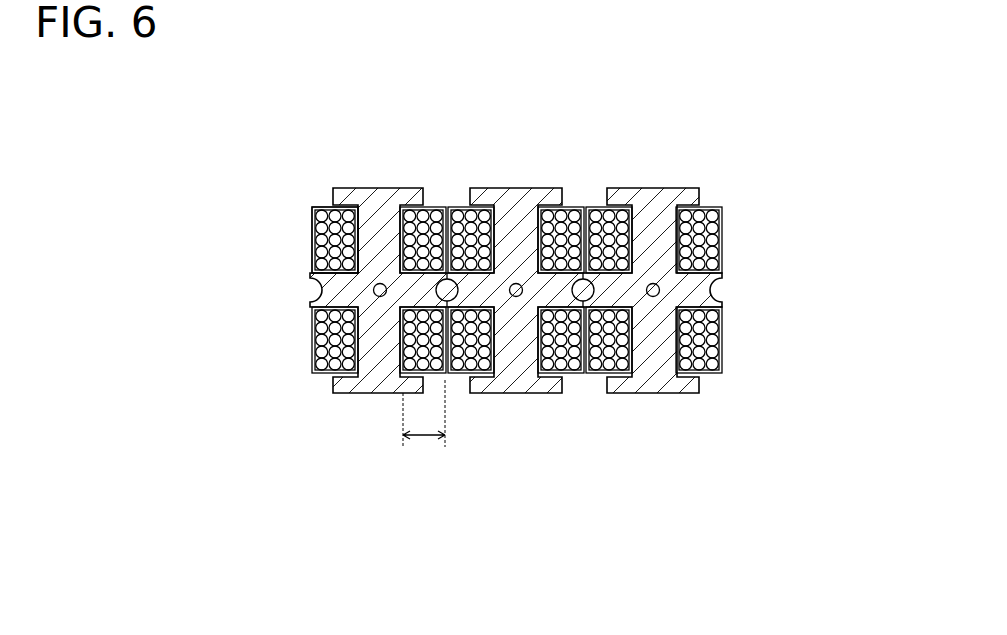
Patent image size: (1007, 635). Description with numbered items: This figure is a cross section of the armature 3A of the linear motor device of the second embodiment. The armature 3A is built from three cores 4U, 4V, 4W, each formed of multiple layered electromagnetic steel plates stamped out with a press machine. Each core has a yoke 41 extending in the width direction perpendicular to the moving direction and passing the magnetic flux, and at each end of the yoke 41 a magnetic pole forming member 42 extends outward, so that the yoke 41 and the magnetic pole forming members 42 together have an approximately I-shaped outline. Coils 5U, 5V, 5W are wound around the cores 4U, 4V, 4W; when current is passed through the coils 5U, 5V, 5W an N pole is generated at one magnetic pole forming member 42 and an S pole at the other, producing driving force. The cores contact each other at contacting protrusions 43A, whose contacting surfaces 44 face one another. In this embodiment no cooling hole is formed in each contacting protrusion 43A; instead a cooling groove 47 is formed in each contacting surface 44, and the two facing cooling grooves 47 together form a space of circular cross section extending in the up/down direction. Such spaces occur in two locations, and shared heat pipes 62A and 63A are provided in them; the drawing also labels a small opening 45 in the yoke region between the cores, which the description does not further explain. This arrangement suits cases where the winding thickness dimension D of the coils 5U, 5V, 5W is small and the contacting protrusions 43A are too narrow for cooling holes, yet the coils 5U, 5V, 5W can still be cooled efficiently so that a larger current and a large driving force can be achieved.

The armature 3A is at (738, 128).
The magnetic pole forming member 42 is at (333, 193).
The yoke 41 is at (312, 232).
The contacting protrusion 43A is at (312, 258).
The contacting surface 44 is at (312, 277).
The cooling groove 47 is at (312, 291).
The through hole 45 is at (380, 283).
The heat pipe 62A is at (453, 206).
The heat pipe 63A is at (590, 206).
The coil 5U is at (312, 345).
The coil 5V is at (464, 376).
The coil 5W is at (597, 374).
The core 4U is at (380, 394).
The core 4V is at (525, 393).
The core 4W is at (657, 394).
The winding thickness dimension D is at (424, 427).